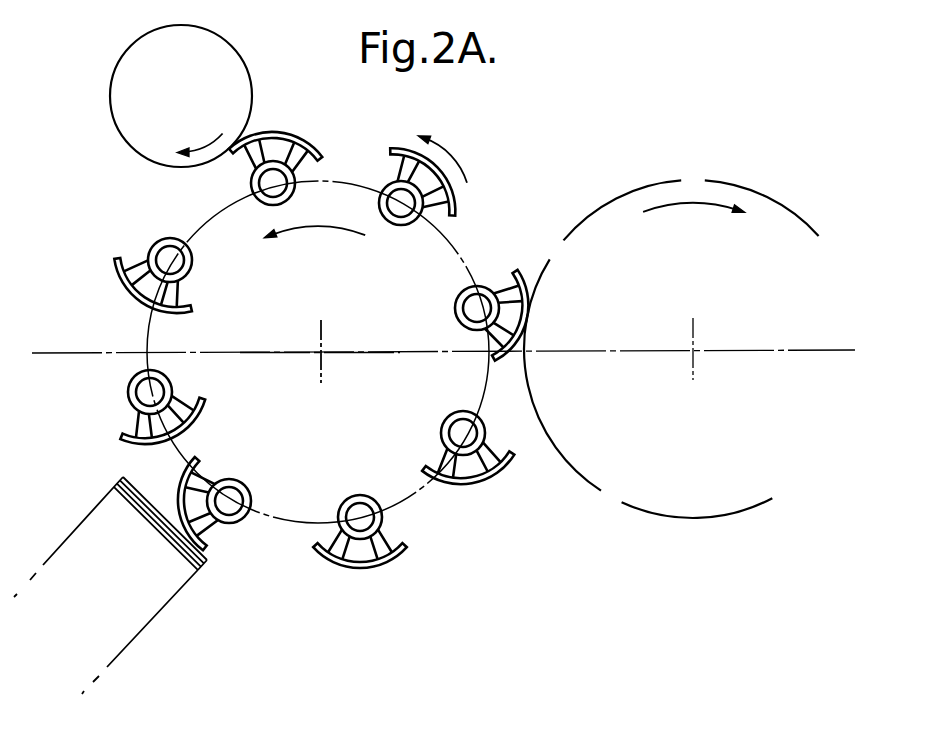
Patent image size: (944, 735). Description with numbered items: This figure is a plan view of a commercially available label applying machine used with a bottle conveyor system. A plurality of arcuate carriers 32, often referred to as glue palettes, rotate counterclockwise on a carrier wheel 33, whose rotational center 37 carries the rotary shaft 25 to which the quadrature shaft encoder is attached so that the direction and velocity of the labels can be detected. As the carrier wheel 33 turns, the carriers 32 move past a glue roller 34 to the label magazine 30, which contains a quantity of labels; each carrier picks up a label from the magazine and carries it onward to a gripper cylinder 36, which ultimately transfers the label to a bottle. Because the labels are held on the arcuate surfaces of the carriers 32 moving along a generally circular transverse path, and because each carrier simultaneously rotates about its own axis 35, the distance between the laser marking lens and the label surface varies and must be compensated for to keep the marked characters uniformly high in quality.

The rotary shaft 25 is at (321, 352).
The label magazine 30 is at (127, 580).
The arcuate carrier 32 is at (128, 285).
The carrier wheel 33 is at (402, 408).
The glue roller 34 is at (198, 108).
The carrier axis 35 is at (172, 262).
The gripper cylinder 36 is at (654, 400).
The rotational center 37 is at (321, 352).